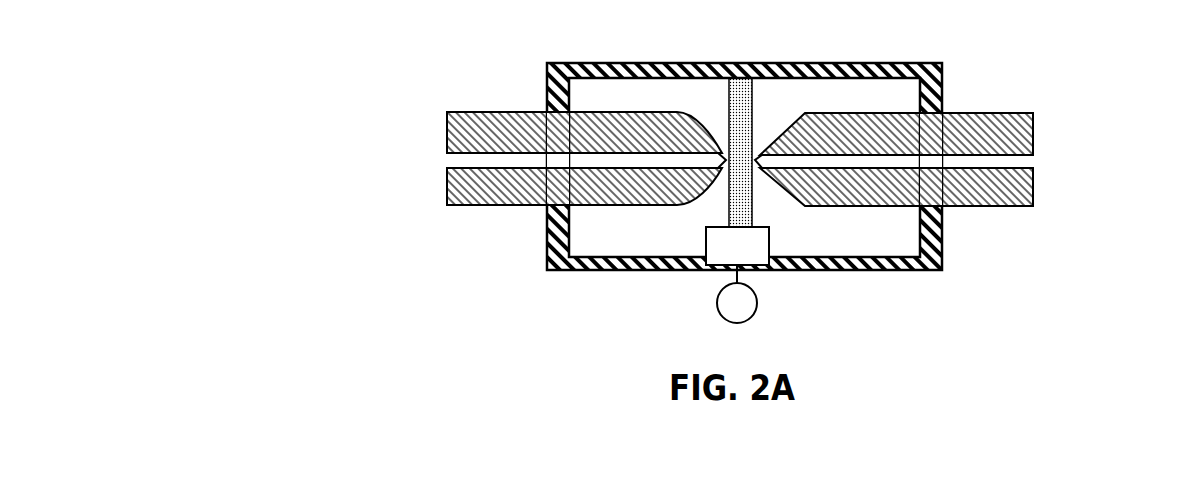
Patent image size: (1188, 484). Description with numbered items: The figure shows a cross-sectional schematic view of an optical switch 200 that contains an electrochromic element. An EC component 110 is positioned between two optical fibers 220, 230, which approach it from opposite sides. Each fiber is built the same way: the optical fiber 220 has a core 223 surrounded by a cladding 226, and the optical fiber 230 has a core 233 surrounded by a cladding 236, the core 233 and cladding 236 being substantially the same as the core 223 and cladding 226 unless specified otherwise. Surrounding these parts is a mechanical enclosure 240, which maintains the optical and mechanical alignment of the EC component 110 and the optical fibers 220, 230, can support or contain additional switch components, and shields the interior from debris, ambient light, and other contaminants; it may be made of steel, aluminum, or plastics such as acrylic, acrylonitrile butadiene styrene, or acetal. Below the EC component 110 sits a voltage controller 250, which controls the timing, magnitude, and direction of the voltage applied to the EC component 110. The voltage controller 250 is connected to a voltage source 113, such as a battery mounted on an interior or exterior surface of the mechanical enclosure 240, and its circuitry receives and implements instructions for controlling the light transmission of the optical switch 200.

The optical switch 200 is at (673, 176).
The optical fiber 220 is at (549, 149).
The core 223 is at (450, 157).
The cladding 226 is at (540, 188).
The optical fiber 230 is at (930, 150).
The core 233 is at (1035, 158).
The cladding 236 is at (965, 195).
The mechanical enclosure 240 is at (858, 63).
The EC component 110 is at (741, 128).
The voltage controller 250 is at (737, 246).
The voltage source 113 is at (757, 300).